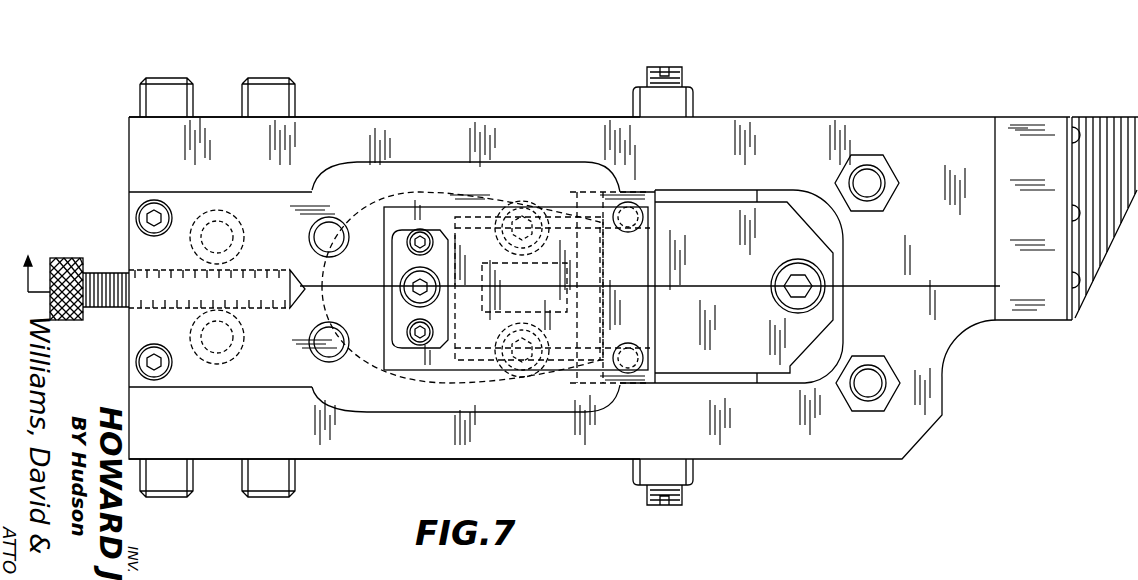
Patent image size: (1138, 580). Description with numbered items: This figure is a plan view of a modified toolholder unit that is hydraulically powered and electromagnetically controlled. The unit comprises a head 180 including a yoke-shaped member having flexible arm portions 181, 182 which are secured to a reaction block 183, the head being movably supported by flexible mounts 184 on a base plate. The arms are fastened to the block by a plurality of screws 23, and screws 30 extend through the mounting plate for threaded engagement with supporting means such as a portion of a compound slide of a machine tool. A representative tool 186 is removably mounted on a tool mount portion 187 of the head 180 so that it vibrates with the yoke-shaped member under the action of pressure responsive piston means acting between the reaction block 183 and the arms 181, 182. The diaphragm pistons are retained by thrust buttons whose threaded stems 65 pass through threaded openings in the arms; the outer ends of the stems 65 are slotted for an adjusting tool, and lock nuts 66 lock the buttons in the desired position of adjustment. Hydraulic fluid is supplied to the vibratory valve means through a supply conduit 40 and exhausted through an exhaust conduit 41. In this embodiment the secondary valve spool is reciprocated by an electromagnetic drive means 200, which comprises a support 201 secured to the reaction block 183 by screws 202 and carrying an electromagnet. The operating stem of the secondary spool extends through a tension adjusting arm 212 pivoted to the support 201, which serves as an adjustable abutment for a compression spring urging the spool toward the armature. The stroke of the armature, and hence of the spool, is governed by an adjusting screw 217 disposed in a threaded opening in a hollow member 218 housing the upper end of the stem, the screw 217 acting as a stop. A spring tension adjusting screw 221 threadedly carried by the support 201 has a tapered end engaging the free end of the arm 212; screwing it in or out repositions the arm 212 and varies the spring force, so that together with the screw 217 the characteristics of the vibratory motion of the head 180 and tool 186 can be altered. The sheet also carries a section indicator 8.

The section line indicator 8 is at (37, 264).
The screws 23 is at (250, 78).
The screws 30 is at (783, 263).
The supply conduit 40 is at (309, 237).
The exhaust conduit 41 is at (309, 335).
The threaded stems 65 is at (647, 74).
The lock nuts 66 is at (688, 100).
The head 180 is at (740, 110).
The flexible arm portion 181 is at (412, 459).
The flexible arm portion 182 is at (420, 117).
The reaction block 183 is at (733, 213).
The flexible mounts 184 is at (877, 339).
The tool 186 is at (1095, 123).
The tool mount portion 187 is at (957, 123).
The electromagnetic drive means 200 is at (490, 207).
The support 201 is at (335, 192).
The screws 202 is at (136, 206).
The tension adjusting arm 212 is at (362, 207).
The adjusting screw 217 is at (412, 242).
The hollow member 218 is at (438, 240).
The spring tension adjusting screw 221 is at (72, 258).